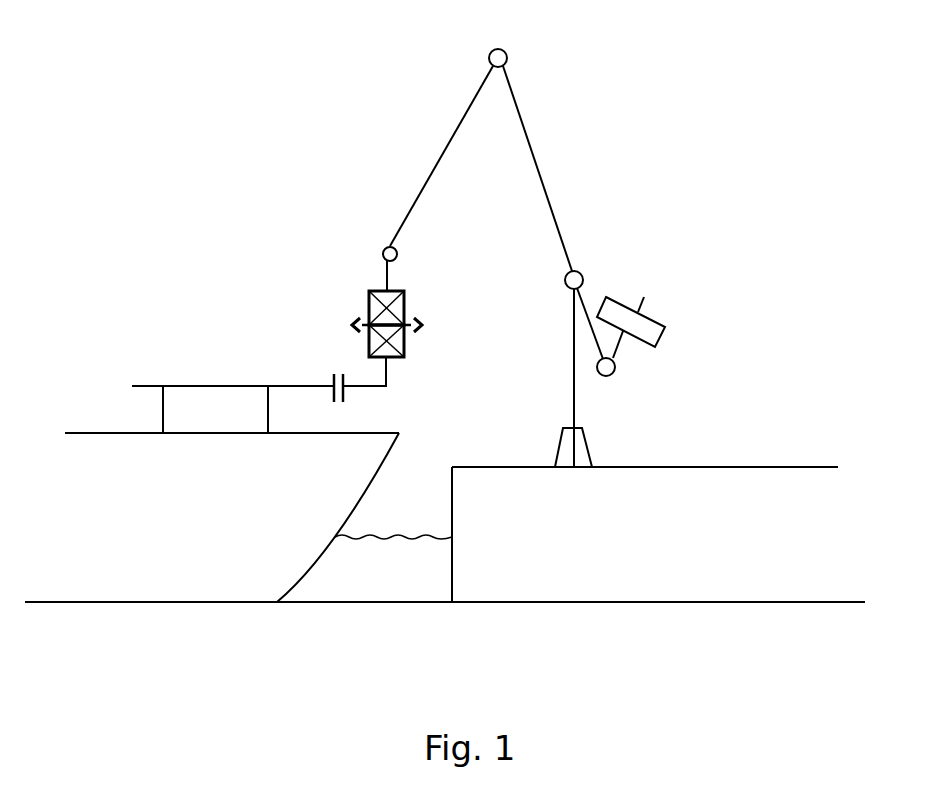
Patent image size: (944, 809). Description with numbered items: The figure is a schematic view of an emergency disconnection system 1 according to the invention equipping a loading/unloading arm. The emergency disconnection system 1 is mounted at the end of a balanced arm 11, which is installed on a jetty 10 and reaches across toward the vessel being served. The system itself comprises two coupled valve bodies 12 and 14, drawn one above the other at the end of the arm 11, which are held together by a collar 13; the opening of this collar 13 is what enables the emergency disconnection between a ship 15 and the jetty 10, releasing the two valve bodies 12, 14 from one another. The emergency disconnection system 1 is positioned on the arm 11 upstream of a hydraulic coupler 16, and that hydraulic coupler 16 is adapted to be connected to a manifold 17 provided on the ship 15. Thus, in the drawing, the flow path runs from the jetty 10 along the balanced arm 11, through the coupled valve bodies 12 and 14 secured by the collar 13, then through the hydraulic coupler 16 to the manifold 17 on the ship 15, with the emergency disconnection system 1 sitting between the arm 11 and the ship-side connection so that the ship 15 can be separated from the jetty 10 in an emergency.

The emergency disconnection system 1 is at (389, 326).
The jetty 10 is at (545, 593).
The balanced arm 11 is at (523, 122).
The valve body 12 is at (369, 298).
The collar 13 is at (350, 326).
The valve body 14 is at (367, 342).
The ship 15 is at (163, 590).
The hydraulic coupler 16 is at (347, 393).
The manifold 17 is at (332, 392).